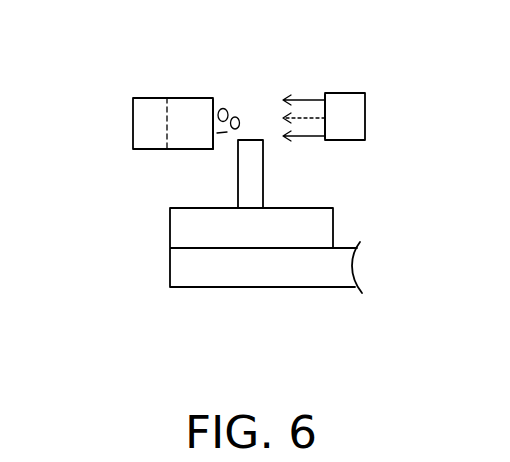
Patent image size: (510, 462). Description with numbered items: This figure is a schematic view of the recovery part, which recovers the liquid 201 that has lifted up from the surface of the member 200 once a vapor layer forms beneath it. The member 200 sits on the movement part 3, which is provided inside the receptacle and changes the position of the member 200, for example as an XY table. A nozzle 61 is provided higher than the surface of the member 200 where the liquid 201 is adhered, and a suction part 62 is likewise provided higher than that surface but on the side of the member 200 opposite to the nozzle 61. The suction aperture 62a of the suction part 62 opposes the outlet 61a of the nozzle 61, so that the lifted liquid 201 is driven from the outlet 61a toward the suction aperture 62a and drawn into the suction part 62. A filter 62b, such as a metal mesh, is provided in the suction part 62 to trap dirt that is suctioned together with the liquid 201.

The movement part 3 is at (247, 272).
The member 200 is at (232, 173).
The suction part 62 is at (133, 130).
The filter 62b is at (167, 118).
The suction aperture 62a is at (214, 140).
The liquid 201 is at (223, 107).
The nozzle 61 is at (355, 118).
The outlet 61a is at (324, 128).